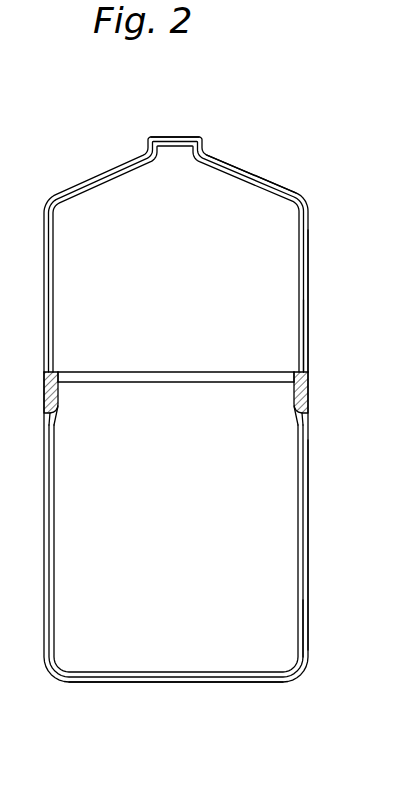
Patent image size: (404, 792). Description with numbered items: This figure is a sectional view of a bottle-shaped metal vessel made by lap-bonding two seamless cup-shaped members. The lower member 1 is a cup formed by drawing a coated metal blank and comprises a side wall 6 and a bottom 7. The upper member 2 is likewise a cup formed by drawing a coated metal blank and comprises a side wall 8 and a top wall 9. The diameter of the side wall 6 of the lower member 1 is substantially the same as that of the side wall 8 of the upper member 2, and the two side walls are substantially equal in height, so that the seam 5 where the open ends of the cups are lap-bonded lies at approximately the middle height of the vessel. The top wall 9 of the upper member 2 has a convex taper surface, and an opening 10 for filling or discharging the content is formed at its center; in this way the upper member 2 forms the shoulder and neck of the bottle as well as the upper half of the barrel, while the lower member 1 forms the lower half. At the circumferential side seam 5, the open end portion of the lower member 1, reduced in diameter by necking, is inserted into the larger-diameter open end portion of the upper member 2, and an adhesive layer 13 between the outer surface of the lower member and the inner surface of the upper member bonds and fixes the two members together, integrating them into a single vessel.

The lower member 1 is at (165, 510).
The upper member 2 is at (163, 288).
The circumferential side seam 5 is at (43, 397).
The side wall 6 is at (308, 545).
The bottom 7 is at (187, 682).
The side wall 8 is at (308, 281).
The top wall 9 is at (263, 183).
The opening 10 is at (182, 137).
The adhesive layer 13 is at (48, 378).